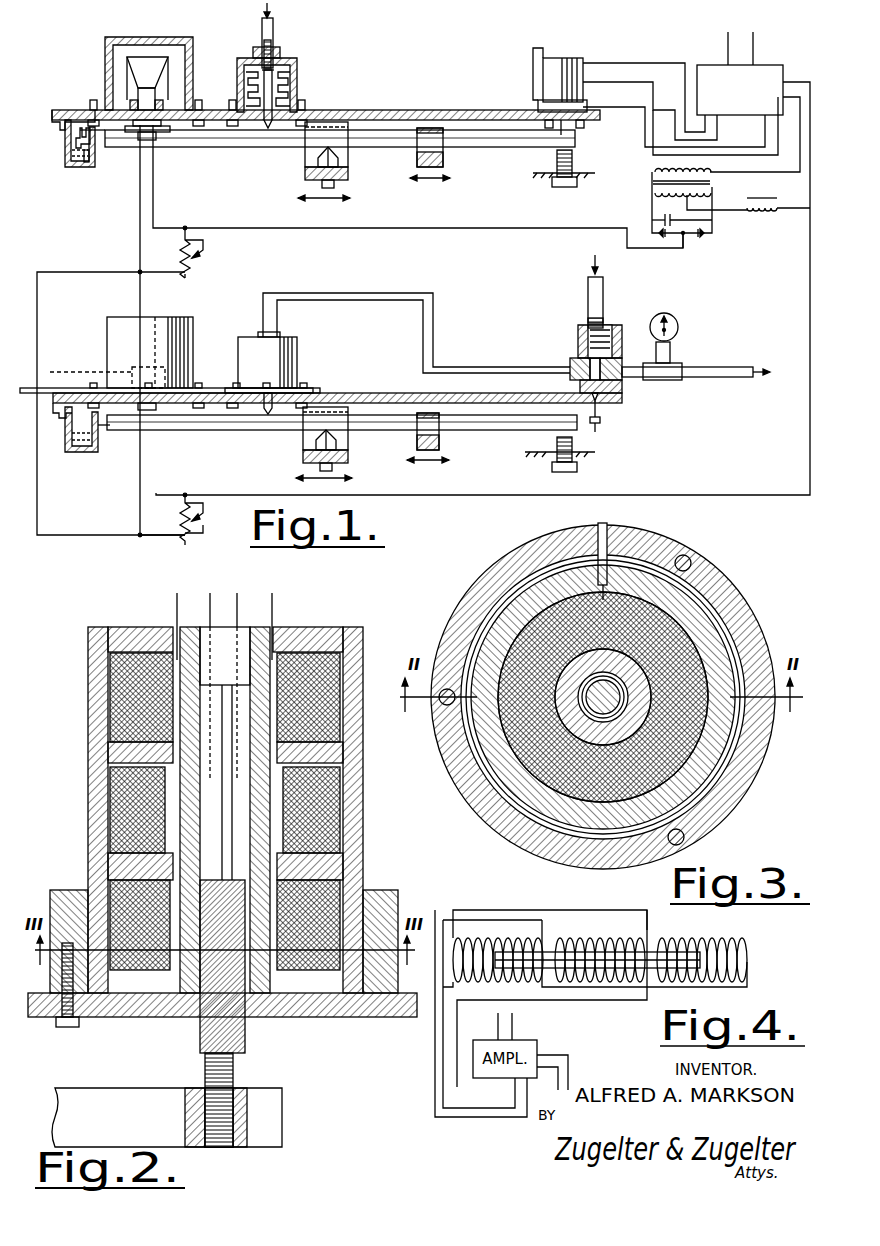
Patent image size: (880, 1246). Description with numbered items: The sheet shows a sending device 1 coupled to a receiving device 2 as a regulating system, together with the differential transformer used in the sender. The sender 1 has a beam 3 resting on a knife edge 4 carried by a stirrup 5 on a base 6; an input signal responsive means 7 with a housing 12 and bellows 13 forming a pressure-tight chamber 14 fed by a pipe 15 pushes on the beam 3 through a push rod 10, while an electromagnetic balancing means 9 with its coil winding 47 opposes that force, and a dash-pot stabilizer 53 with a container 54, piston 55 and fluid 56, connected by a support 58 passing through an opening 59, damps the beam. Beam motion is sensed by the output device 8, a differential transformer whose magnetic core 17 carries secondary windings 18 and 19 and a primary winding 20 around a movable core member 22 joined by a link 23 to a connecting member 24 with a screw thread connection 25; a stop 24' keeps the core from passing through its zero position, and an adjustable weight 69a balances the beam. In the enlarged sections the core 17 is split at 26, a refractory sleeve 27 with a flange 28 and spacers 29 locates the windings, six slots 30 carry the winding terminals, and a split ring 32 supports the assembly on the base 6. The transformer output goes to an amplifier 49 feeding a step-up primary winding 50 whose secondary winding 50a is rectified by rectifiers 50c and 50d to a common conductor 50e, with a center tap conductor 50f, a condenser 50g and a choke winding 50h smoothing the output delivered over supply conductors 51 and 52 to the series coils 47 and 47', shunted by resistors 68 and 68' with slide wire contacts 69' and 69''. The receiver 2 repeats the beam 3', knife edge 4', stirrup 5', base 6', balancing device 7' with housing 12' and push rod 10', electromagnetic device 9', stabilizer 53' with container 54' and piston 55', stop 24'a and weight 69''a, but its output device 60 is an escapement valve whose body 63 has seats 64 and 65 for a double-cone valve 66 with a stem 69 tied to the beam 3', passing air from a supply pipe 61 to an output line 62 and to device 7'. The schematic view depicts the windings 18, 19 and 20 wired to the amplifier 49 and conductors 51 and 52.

In FIG. 1, the sending device 1 is at (405, 95).
In FIG. 1, the receiving device 2 is at (478, 323).
In FIG. 1, the beam 3 is at (340, 155).
In FIG. 2, the beam 3 is at (183, 1117).
In FIG. 1, the beam 3' is at (342, 403).
In FIG. 1, the knife edge 4 is at (308, 161).
In FIG. 1, the knife edge 4' is at (306, 444).
In FIG. 1, the stirrup 5 is at (342, 166).
In FIG. 1, the stirrup 5' is at (346, 449).
In FIG. 1, the base 6 is at (326, 99).
In FIG. 2, the base 6 is at (222, 1022).
In FIG. 1, the base 6' is at (321, 387).
In FIG. 1, the input signal responsive means 7 is at (301, 40).
In FIG. 1, the balancing device 7' is at (276, 362).
In FIG. 1, the output device 8 is at (520, 85).
In FIG. 1, the electromagnetic balancing means 9 is at (130, 71).
In FIG. 1, the electromagnetic device 9' is at (135, 352).
In FIG. 1, the push rod 10 is at (299, 96).
In FIG. 1, the push rod 10' is at (239, 423).
In FIG. 1, the housing 12 is at (292, 72).
In FIG. 1, the housing 12' is at (220, 352).
In FIG. 1, the bellows 13 is at (240, 85).
In FIG. 1, the pressure-tight chamber 14 is at (250, 62).
In FIG. 1, the pipe 15 is at (273, 35).
In FIG. 2, the magnetic core 17 is at (363, 805).
In FIG. 3, the magnetic core 17 is at (603, 697).
In FIG. 1, the secondary winding 18 is at (585, 110).
In FIG. 2, the secondary winding 18 is at (338, 890).
In FIG. 3, the secondary winding 18 is at (690, 740).
In FIG. 4, the secondary winding 18 is at (491, 968).
In FIG. 1, the secondary winding 19 is at (583, 63).
In FIG. 2, the secondary winding 19 is at (338, 670).
In FIG. 4, the secondary winding 19 is at (748, 963).
In FIG. 1, the primary winding 20 is at (583, 82).
In FIG. 2, the primary winding 20 is at (340, 793).
In FIG. 4, the primary winding 20 is at (590, 938).
In FIG. 2, the movable core member 22 is at (207, 822).
In FIG. 3, the movable core member 22 is at (537, 822).
In FIG. 2, the link 23 is at (245, 1030).
In FIG. 1, the connecting member 24 is at (599, 128).
In FIG. 2, the connecting member 24 is at (245, 1100).
In FIG. 1, the stop 24' is at (579, 163).
In FIG. 1, the stop 24'a is at (585, 451).
In FIG. 2, the screw thread connection 25 is at (233, 1108).
In FIG. 3, the split 26 is at (626, 548).
In FIG. 2, the hollow sleeve 27 is at (272, 627).
In FIG. 3, the hollow sleeve 27 is at (478, 776).
In FIG. 2, the flange 28 is at (167, 790).
In FIG. 2, the spacers 29 is at (107, 752).
In FIG. 3, the slots 30 is at (648, 635).
In FIG. 2, the split ring 32 is at (398, 893).
In FIG. 1, the coil winding 47 is at (173, 108).
In FIG. 1, the coil winding 47' is at (104, 385).
In FIG. 1, the amplifier 49 is at (767, 65).
In FIG. 1, the primary winding 50 is at (653, 172).
In FIG. 1, the secondary winding 50a is at (653, 193).
In FIG. 1, the rectifier 50c is at (668, 252).
In FIG. 1, the rectifier 50d is at (703, 237).
In FIG. 1, the common conductor 50e is at (660, 235).
In FIG. 1, the conductor 50f is at (707, 210).
In FIG. 1, the condenser 50g is at (652, 220).
In FIG. 1, the choke winding 50h is at (752, 210).
In FIG. 1, the supply conductor 51 is at (560, 230).
In FIG. 4, the supply conductor 51 is at (568, 1075).
In FIG. 1, the supply conductor 52 is at (805, 288).
In FIG. 4, the supply conductor 52 is at (558, 1078).
In FIG. 1, the stabilizer 53 is at (64, 144).
In FIG. 1, the stabilizer 53' is at (71, 441).
In FIG. 1, the cylindrical container 54 is at (64, 127).
In FIG. 1, the cylindrical container 54' is at (95, 431).
In FIG. 1, the piston 55 is at (74, 173).
In FIG. 1, the piston 55' is at (65, 436).
In FIG. 1, the fluid 56 is at (92, 160).
In FIG. 1, the support 58 is at (80, 120).
In FIG. 1, the opening 59 is at (85, 124).
In FIG. 1, the output device 60 is at (562, 350).
In FIG. 1, the supply pipe 61 is at (603, 280).
In FIG. 1, the output line 62 is at (707, 366).
In FIG. 1, the valve body 63 is at (612, 332).
In FIG. 1, the tapered seat 64 is at (605, 332).
In FIG. 1, the tapered seat 65 is at (622, 391).
In FIG. 1, the valve 66 is at (570, 385).
In FIG. 1, the shunt resistor 68 is at (130, 403).
In FIG. 1, the shunt resistor 68' is at (175, 519).
In FIG. 1, the stem 69 is at (621, 420).
In FIG. 1, the slide wire contact 69' is at (216, 253).
In FIG. 1, the slide wire contact 69'' is at (216, 533).
In FIG. 1, the adjustable weight 69a is at (413, 167).
In FIG. 1, the adjustable weight 69''a is at (456, 443).